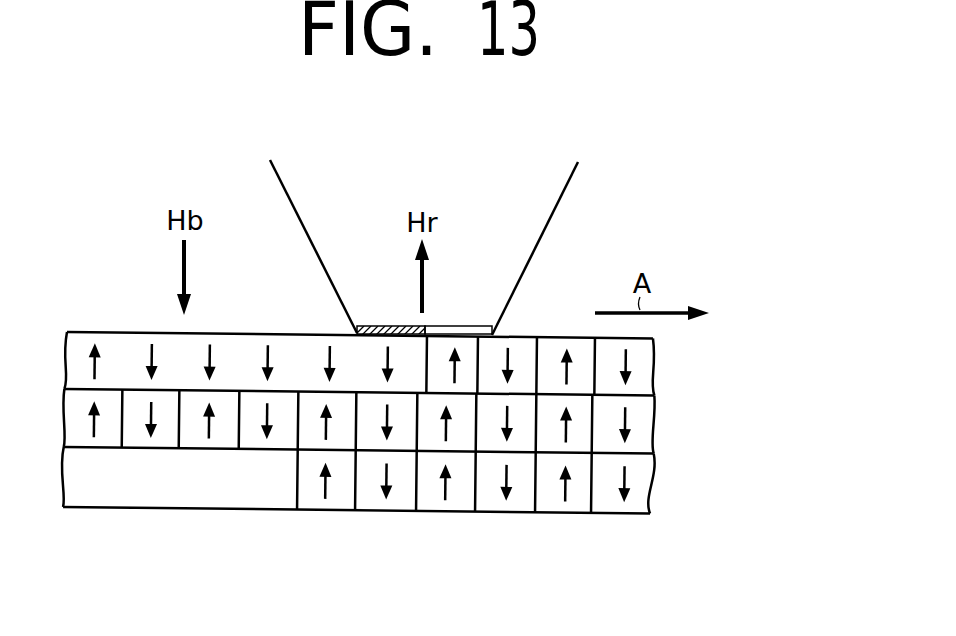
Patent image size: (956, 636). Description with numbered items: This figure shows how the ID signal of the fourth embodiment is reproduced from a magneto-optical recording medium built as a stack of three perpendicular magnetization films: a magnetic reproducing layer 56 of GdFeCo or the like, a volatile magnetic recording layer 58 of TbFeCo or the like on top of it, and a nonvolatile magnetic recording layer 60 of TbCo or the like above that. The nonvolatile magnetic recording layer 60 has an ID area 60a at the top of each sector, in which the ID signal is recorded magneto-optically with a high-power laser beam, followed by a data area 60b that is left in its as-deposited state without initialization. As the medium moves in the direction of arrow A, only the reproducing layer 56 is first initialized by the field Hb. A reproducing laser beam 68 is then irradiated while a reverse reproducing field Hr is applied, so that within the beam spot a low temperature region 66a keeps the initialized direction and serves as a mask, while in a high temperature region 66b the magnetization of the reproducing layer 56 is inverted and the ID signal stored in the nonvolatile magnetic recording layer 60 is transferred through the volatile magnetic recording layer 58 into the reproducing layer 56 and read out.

The magnetic reproducing layer 56 is at (655, 373).
The volatile magnetic recording layer 58 is at (655, 430).
The nonvolatile magnetic recording layer 60 is at (399, 521).
The ID area 60a is at (475, 522).
The data area 60b is at (177, 498).
The low temperature region 66a is at (382, 316).
The high temperature region 66b is at (466, 318).
The reproducing laser beam 68 is at (570, 185).